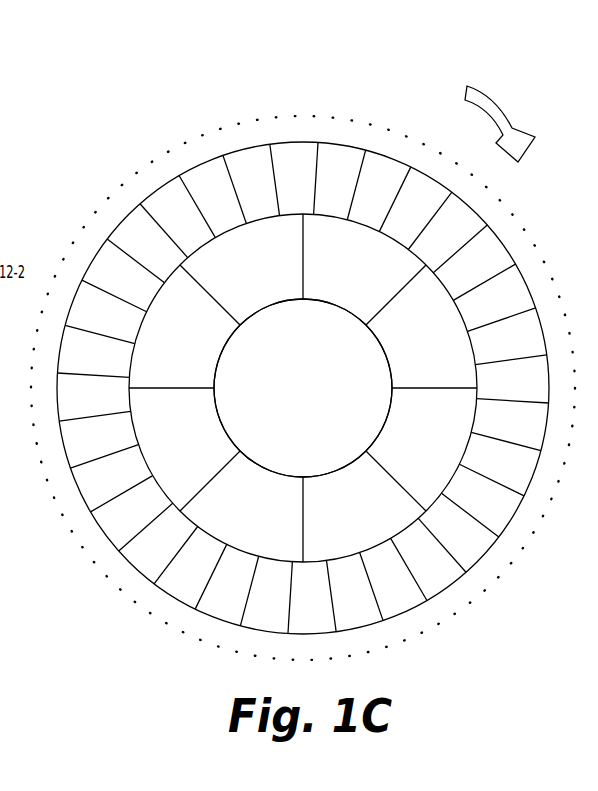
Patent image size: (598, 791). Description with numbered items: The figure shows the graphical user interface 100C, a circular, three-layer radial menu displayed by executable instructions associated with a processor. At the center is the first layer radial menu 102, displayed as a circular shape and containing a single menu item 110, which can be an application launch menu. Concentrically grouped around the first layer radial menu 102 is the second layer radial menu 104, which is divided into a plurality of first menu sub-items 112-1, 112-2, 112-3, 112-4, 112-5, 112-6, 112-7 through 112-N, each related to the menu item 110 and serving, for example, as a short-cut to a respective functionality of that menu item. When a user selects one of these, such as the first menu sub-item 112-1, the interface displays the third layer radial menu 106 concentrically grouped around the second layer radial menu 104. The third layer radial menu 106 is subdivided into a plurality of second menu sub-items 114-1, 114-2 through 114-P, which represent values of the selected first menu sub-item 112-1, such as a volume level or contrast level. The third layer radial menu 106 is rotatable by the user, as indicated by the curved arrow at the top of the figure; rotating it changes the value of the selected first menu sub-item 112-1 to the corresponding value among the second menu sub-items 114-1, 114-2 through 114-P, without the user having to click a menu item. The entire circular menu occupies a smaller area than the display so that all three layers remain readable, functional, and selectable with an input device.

The graphical user interface 100C is at (293, 78).
The third layer radial menu 106 is at (233, 148).
The second layer radial menu 104 is at (217, 535).
The first layer radial menu 102 is at (366, 436).
The menu item 110 is at (313, 403).
The first menu sub-item 112-1 is at (375, 275).
The first menu sub-item 112-2 is at (445, 343).
The first menu sub-item 112-3 is at (448, 446).
The first menu sub-item 112-4 is at (370, 508).
The first menu sub-item 112-5 is at (273, 511).
The first menu sub-item 112-6 is at (205, 440).
The first menu sub-item 112-7 is at (205, 348).
The first menu sub-item 112-N is at (280, 275).
The second menu sub-item 114-P is at (490, 238).
The second menu sub-item 114-1 is at (518, 278).
The second menu sub-item 114-2 is at (533, 323).